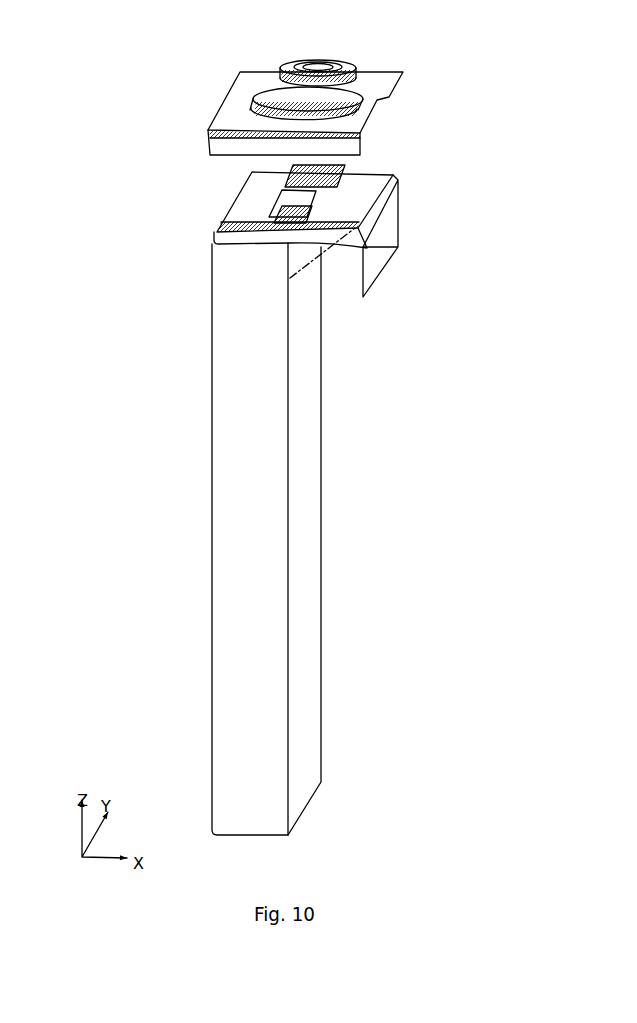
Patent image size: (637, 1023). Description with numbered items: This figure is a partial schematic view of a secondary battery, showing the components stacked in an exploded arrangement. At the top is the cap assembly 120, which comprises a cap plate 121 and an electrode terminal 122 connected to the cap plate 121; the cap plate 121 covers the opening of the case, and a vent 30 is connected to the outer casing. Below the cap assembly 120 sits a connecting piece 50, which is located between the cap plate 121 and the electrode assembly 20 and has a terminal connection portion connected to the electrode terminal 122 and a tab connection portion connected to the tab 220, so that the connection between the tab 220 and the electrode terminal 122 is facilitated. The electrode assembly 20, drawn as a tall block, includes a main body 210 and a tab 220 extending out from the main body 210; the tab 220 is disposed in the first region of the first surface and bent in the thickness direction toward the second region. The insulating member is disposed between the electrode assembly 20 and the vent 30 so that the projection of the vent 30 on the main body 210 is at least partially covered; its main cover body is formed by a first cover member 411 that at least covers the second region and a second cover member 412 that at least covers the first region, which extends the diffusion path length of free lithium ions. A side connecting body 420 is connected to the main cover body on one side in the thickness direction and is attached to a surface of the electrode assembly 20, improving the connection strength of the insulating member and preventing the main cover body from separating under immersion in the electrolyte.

The electrode assembly 20 is at (138, 232).
The vent 30 is at (378, 91).
The connecting piece 50 is at (290, 164).
The cap assembly 120 is at (138, 22).
The cap plate 121 is at (232, 92).
The electrode terminal 122 is at (291, 62).
The main body 210 is at (214, 335).
The tab 220 is at (226, 236).
The first cover member 411 is at (364, 242).
The second cover member 412 is at (394, 179).
The side connecting body 420 is at (299, 274).